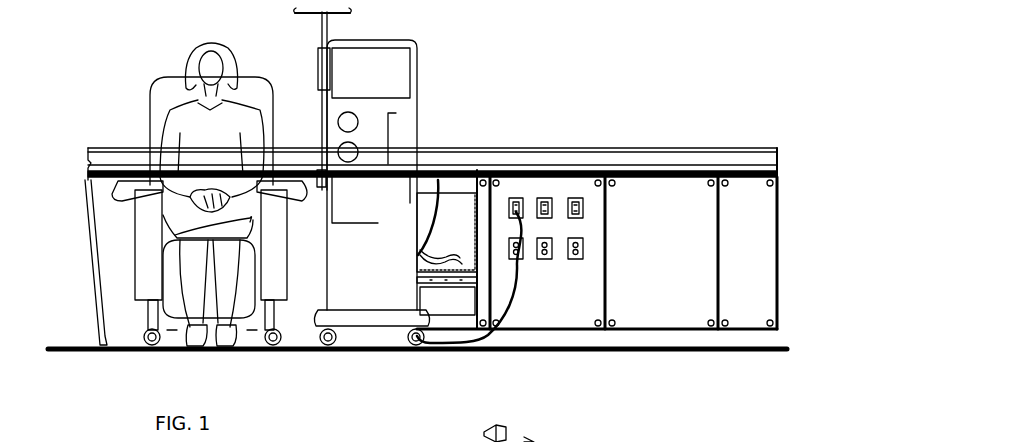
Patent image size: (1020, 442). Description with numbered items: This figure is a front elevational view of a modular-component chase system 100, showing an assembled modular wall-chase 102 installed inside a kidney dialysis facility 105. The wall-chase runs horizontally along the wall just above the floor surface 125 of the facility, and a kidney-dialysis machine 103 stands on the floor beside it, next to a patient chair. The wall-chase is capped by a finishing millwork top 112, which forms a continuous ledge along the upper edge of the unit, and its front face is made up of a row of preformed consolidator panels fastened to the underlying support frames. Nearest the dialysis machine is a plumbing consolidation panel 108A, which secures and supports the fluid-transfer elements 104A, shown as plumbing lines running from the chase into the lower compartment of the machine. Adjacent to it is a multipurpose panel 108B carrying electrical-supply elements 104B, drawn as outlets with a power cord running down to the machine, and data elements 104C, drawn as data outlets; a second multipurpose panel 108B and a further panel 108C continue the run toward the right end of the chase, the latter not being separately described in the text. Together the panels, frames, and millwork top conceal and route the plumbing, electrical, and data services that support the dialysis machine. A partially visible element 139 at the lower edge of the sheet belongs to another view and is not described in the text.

The modular-component chase system 100 is at (590, 45).
The modular wall-chase 102 is at (655, 62).
The kidney-dialysis machine 103 is at (393, 40).
The fluid-transfer elements 104A is at (438, 180).
The electrical-supply elements 104B is at (546, 258).
The data elements 104C is at (575, 198).
The kidney dialysis facility 105 is at (117, 35).
The plumbing consolidation panel 108A is at (468, 185).
The multipurpose panel 108B is at (577, 310).
The access panel 108C is at (746, 310).
The finishing millwork top 112 is at (693, 165).
The floor surface 125 is at (87, 352).
The speaker 139 is at (402, 438).